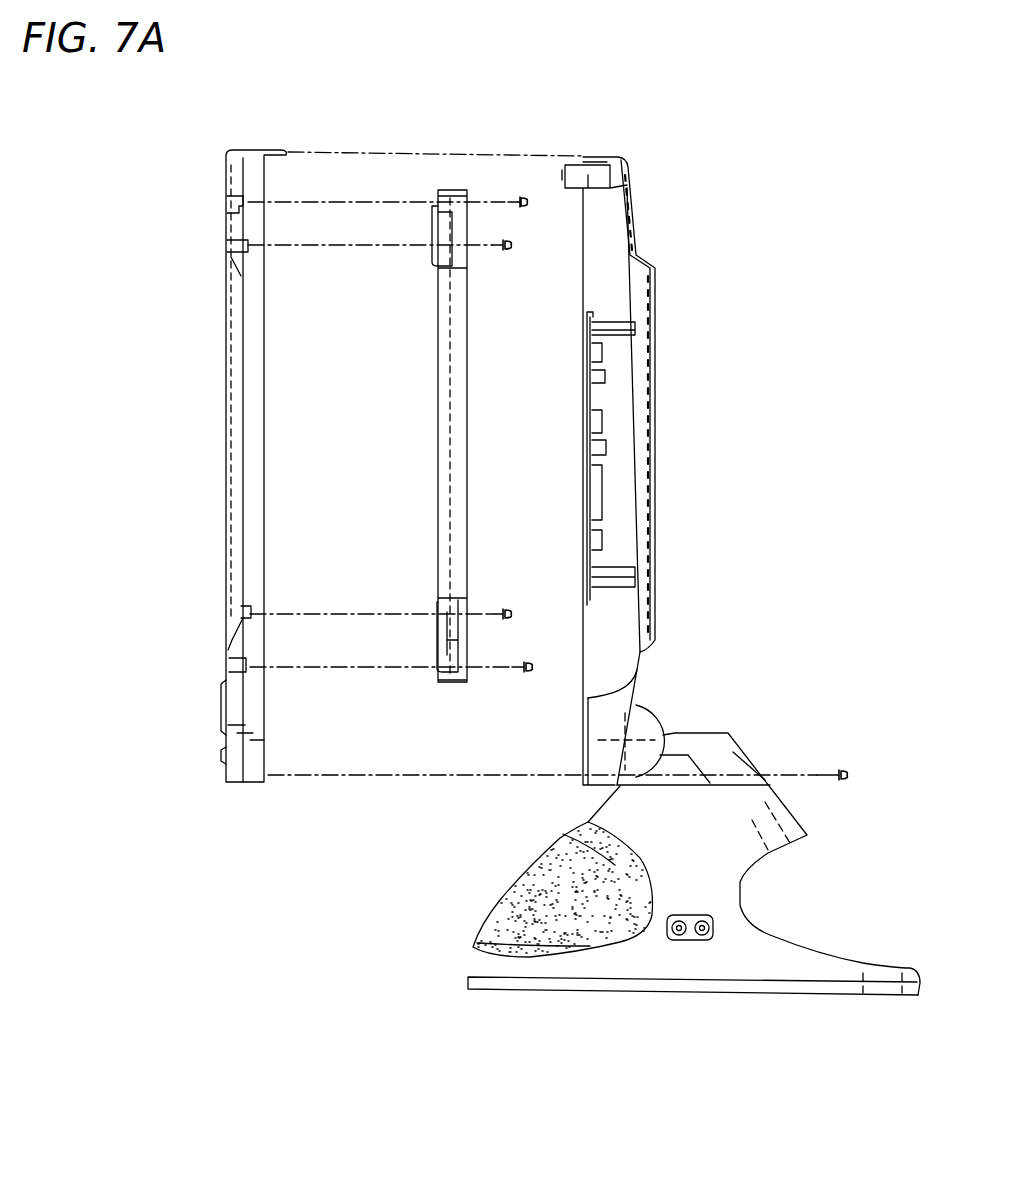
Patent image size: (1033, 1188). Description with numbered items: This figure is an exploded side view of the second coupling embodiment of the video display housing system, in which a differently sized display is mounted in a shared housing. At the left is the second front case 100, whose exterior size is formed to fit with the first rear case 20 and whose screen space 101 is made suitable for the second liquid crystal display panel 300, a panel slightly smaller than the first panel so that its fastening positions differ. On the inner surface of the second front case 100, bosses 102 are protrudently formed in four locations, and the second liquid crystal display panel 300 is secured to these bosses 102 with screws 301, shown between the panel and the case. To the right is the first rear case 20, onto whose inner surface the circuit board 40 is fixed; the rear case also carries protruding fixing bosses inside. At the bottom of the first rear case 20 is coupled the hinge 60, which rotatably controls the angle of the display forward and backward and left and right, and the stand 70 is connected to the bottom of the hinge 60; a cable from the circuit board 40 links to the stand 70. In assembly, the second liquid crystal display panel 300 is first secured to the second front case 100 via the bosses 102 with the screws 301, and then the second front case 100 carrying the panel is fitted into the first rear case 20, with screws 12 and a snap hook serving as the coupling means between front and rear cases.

The second front case 100 is at (226, 201).
The screen space 101 is at (238, 513).
The bosses 102 is at (249, 242).
The second liquid crystal display panel 300 is at (437, 464).
The screws 301 is at (518, 200).
The first rear case 20 is at (656, 449).
The circuit board 40 is at (590, 465).
The hinge 60 is at (743, 727).
The screws 12 is at (830, 772).
The stand 70 is at (512, 885).